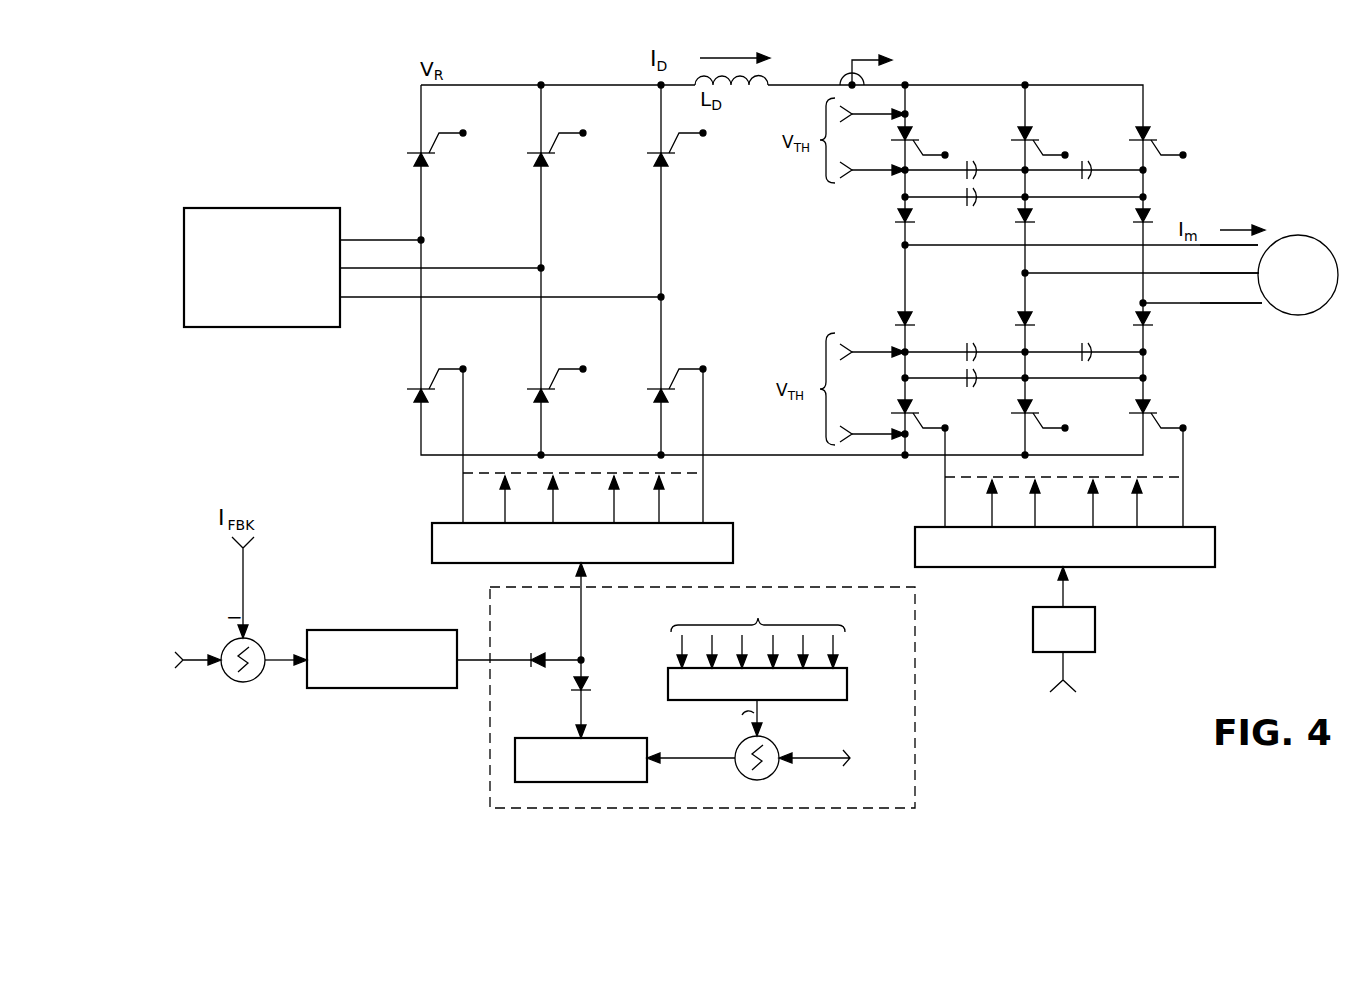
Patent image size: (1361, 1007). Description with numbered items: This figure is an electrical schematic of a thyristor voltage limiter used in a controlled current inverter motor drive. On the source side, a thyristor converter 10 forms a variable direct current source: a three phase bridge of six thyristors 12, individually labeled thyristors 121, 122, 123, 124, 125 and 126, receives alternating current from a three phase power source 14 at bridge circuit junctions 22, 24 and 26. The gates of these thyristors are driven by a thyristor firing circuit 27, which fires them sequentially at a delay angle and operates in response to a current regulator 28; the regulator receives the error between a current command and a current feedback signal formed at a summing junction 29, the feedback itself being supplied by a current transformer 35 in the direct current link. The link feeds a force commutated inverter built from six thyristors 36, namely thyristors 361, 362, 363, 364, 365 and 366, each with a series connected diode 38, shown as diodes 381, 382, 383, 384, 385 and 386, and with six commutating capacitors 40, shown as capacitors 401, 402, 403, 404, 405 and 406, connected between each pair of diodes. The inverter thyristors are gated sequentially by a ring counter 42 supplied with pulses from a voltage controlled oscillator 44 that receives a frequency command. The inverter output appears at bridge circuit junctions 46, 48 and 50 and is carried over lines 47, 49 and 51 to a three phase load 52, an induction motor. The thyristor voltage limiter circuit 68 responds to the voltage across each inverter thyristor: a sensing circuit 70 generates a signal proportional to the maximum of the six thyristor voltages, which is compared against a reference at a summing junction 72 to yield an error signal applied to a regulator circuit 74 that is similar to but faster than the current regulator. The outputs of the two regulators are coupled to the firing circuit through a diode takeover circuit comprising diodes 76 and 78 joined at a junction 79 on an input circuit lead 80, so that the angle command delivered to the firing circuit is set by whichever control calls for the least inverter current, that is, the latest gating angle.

The thyristor converter 10 is at (506, 221).
The thyristors 12 is at (576, 326).
The thyristor 121 is at (459, 150).
The thyristor 122 is at (579, 150).
The thyristor 123 is at (701, 150).
The thyristor 124 is at (440, 358).
The thyristor 125 is at (568, 363).
The thyristor 126 is at (702, 360).
The three phase power source 14 is at (258, 208).
The bridge circuit junction 22 is at (430, 243).
The bridge circuit junction 24 is at (549, 271).
The bridge circuit junction 26 is at (670, 300).
The thyristor firing circuit 27 is at (734, 542).
The current regulator 28 is at (370, 630).
The summing junction 29 is at (243, 683).
The current transformer 35 is at (838, 81).
The thyristors 36 is at (1033, 316).
The thyristor 361 is at (926, 152).
The thyristor 362 is at (1048, 153).
The thyristor 363 is at (1168, 143).
The thyristor 364 is at (874, 416).
The thyristor 365 is at (1046, 425).
The thyristor 366 is at (1174, 425).
The series connected diodes 38 is at (1032, 279).
The diode 381 is at (894, 221).
The diode 382 is at (1043, 229).
The diode 383 is at (1130, 222).
The diode 384 is at (927, 321).
The diode 385 is at (1037, 317).
The diode 386 is at (1156, 334).
The commutating capacitors 40 is at (1036, 280).
The commutating capacitor 401 is at (978, 164).
The commutating capacitor 402 is at (1088, 172).
The commutating capacitor 403 is at (978, 204).
The commutating capacitor 404 is at (974, 351).
The commutating capacitor 405 is at (1082, 351).
The commutating capacitor 406 is at (976, 386).
The ring counter 42 is at (1216, 528).
The voltage controlled oscillator 44 is at (1098, 648).
The bridge circuit junction 46 is at (896, 250).
The line 47 is at (1196, 252).
The bridge circuit junction 48 is at (1012, 275).
The line 49 is at (1202, 280).
The bridge circuit junction 50 is at (1125, 302).
The line 51 is at (1220, 308).
The three phase load 52 is at (1316, 246).
The thyristor voltage limiter circuit 68 is at (922, 716).
The voltage sensing circuit 70 is at (846, 700).
The summing junction 72 is at (768, 774).
The regulator circuit 74 is at (554, 738).
The diode 76 is at (588, 694).
The diode 78 is at (538, 658).
The junction 79 is at (586, 664).
The input circuit lead 80 is at (583, 598).